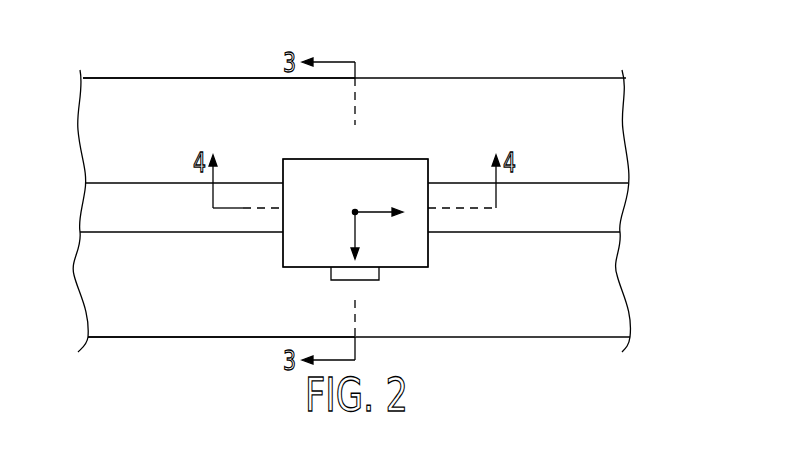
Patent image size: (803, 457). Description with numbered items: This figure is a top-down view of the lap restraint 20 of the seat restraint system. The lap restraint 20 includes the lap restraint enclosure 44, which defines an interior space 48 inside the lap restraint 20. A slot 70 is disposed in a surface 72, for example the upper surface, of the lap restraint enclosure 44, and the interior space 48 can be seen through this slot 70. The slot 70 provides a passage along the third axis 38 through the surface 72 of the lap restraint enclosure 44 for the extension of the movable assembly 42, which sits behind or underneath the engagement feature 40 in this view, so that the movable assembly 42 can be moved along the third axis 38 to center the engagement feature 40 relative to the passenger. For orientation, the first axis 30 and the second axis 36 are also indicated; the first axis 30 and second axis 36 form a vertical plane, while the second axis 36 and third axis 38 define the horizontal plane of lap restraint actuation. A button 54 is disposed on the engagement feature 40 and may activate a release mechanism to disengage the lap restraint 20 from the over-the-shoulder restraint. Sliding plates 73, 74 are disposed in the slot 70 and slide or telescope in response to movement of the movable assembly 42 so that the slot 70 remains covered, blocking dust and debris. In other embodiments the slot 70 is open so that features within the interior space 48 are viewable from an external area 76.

The lap restraint 20 is at (590, 43).
The lap restraint enclosure 44 is at (128, 73).
The movable assembly 42 is at (272, 171).
The engagement feature 40 is at (428, 246).
The button 54 is at (380, 269).
The first axis 30 is at (352, 210).
The second axis 36 is at (354, 222).
The third axis 38 is at (376, 212).
The slot 70 is at (125, 184).
The surface 72 is at (500, 97).
The sliding plate 73 is at (130, 217).
The sliding plate 74 is at (606, 197).
The interior space 48 is at (511, 214).
The external area 76 is at (456, 62).